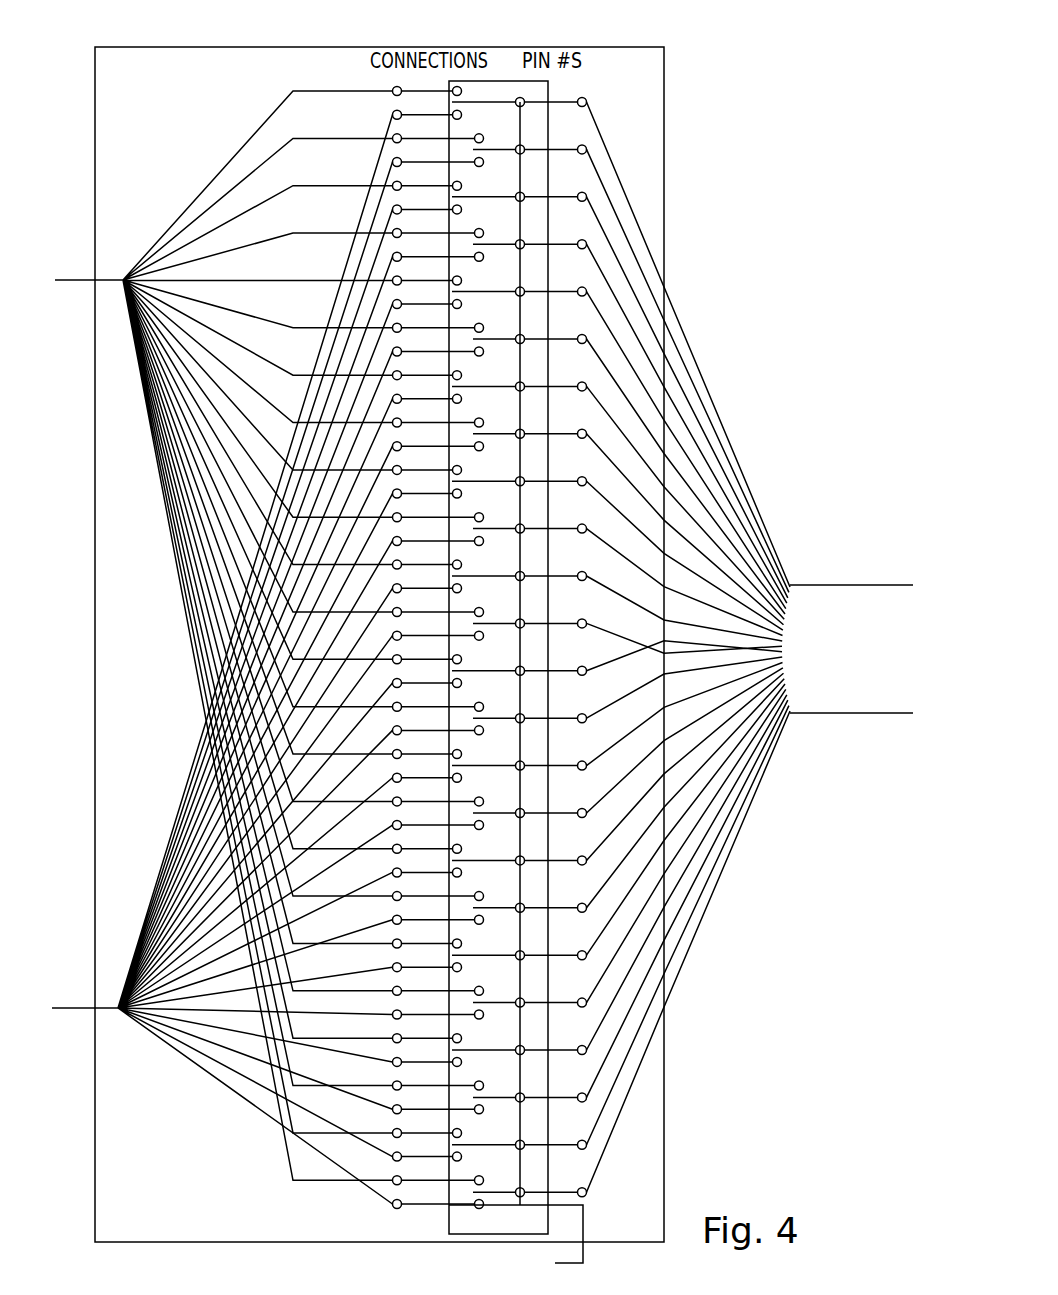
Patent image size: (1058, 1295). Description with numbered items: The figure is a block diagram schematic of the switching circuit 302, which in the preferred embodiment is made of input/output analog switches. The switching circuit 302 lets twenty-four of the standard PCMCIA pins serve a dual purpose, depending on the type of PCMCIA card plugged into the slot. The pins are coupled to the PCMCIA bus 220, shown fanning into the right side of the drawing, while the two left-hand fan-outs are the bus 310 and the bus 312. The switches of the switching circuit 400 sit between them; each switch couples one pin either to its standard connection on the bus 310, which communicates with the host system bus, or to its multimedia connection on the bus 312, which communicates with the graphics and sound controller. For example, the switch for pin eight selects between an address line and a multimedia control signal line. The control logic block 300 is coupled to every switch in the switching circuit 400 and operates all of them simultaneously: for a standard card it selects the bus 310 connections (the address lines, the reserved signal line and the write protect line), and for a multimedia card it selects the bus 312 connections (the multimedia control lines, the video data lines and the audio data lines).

The switching circuit 302 is at (636, 47).
The bus 310 is at (70, 279).
The bus 312 is at (76, 1005).
The PCMCIA bus 220 is at (858, 584).
The switching circuit 400 is at (449, 1219).
The control logic block 300 is at (410, 1262).